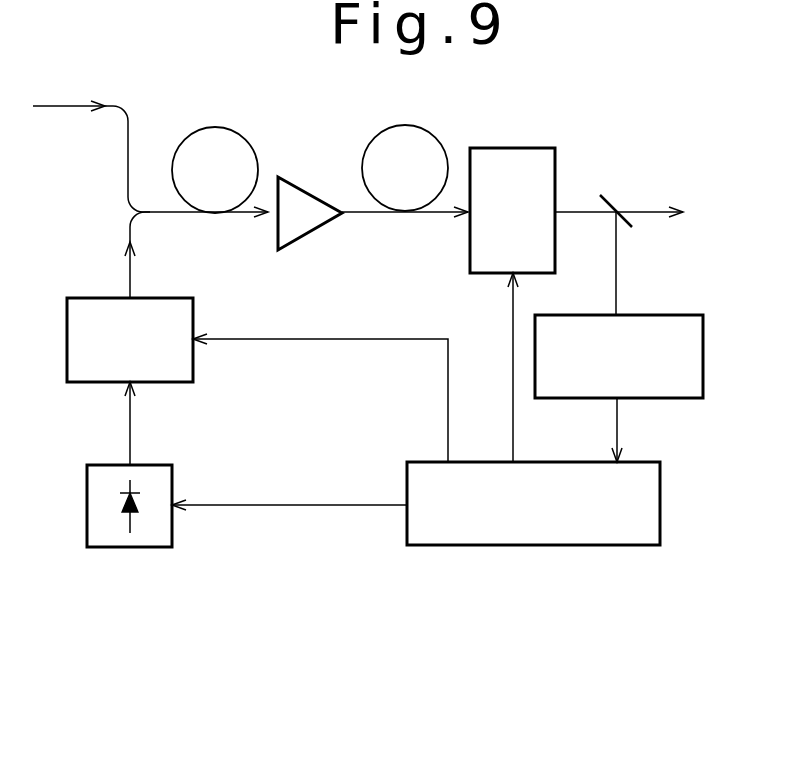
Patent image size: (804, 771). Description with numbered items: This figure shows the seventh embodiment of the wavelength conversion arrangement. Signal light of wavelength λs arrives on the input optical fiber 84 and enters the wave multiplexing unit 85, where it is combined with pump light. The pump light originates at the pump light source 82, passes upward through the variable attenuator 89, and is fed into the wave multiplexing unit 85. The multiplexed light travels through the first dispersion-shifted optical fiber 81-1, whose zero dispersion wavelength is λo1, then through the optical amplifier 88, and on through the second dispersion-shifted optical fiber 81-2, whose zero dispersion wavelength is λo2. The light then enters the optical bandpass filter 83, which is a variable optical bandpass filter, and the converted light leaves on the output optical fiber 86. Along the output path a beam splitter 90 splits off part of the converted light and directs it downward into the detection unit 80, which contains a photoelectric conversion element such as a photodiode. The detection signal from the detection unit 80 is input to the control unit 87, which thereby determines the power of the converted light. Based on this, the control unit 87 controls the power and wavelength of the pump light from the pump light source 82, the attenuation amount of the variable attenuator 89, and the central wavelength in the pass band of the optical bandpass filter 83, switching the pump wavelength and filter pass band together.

The detection unit 80 is at (672, 400).
The dispersion-shifted optical fiber 81-1 is at (250, 198).
The dispersion-shifted optical fiber 81-2 is at (440, 196).
The pump light source 82 is at (140, 548).
The optical bandpass filter 83 is at (515, 148).
The input optical fiber 84 is at (70, 108).
The wave multiplexing unit 85 is at (132, 212).
The output optical fiber 86 is at (647, 213).
The control unit 87 is at (514, 546).
The optical amplifier 88 is at (308, 232).
The variable attenuator 89 is at (194, 360).
The beam splitter 90 is at (608, 201).